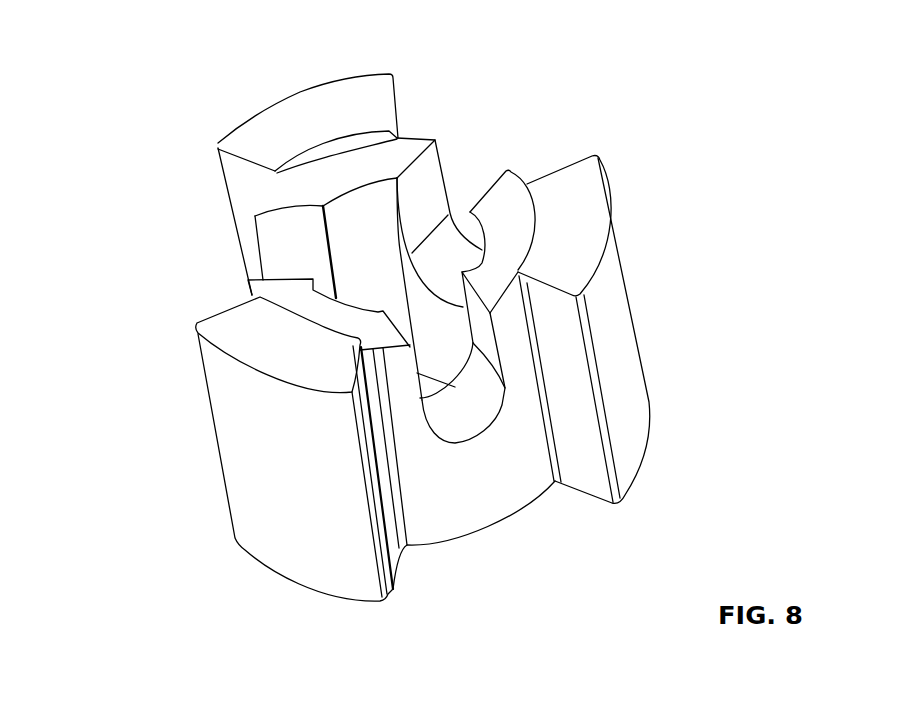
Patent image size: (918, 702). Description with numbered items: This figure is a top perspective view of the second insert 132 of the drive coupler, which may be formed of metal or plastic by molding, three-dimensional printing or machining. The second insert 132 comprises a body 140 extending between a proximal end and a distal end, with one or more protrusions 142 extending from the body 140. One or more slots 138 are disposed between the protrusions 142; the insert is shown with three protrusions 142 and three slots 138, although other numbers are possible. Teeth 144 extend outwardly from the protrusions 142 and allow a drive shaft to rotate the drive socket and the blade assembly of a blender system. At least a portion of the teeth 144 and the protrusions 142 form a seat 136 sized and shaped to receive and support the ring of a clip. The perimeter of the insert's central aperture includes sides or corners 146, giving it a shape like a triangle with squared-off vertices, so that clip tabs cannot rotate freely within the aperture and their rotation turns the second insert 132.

The second insert 132 is at (128, 42).
The seat 136 is at (303, 188).
The slot 138 is at (470, 408).
The body 140 is at (423, 480).
The protrusion 142 is at (428, 192).
The tooth 144 is at (222, 387).
The corner 146 is at (348, 213).